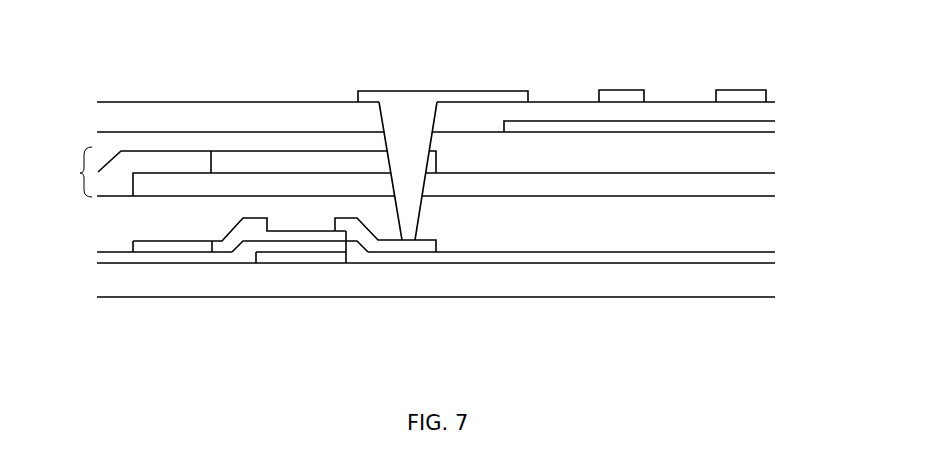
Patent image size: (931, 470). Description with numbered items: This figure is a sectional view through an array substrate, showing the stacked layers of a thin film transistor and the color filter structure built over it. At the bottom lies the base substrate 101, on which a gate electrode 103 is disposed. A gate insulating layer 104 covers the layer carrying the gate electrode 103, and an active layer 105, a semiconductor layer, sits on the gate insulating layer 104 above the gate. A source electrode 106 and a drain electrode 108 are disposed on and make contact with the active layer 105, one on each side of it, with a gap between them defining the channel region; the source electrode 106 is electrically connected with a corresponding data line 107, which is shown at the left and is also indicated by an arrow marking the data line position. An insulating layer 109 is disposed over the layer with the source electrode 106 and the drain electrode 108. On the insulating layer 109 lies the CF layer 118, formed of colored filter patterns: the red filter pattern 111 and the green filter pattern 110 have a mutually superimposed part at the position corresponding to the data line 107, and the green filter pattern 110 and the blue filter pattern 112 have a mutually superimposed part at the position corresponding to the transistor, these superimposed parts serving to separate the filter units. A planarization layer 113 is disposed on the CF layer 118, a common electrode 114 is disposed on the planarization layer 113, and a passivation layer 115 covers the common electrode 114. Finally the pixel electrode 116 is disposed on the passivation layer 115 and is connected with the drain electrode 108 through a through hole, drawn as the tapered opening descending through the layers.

The base substrate 101 is at (110, 285).
The gate electrode 103 is at (332, 260).
The gate insulating layer 104 is at (560, 255).
The active layer 105 is at (338, 240).
The source electrode 106 is at (223, 243).
The data line 107 is at (150, 245).
The drain electrode 108 is at (420, 247).
The insulating layer 109 is at (683, 242).
The green filter pattern 110 is at (322, 183).
The red filter pattern 111 is at (122, 185).
The blue filter pattern 112 is at (233, 157).
The planarization layer 113 is at (553, 162).
The common electrode 114 is at (533, 132).
The passivation layer 115 is at (657, 110).
The pixel electrode 116 is at (398, 102).
The CF layer 118 is at (73, 172).